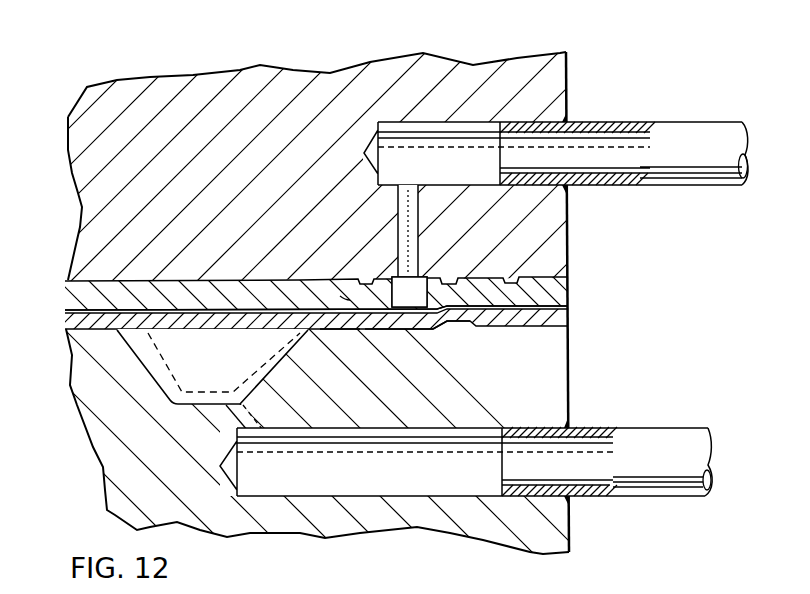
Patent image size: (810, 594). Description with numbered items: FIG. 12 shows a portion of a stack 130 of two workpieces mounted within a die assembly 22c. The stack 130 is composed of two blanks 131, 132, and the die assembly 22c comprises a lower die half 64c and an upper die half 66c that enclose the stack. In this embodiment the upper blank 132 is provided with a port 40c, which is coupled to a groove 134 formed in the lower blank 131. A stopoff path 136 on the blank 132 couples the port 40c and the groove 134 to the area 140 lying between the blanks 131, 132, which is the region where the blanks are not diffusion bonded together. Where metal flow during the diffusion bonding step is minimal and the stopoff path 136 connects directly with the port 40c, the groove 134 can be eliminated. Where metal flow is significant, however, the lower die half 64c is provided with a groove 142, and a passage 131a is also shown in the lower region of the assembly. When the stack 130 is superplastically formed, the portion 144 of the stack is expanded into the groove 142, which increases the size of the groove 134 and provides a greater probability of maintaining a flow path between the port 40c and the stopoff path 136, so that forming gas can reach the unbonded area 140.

The die assembly 22c is at (688, 263).
The port 40c is at (425, 272).
The lower die half 64c is at (570, 388).
The upper die half 66c is at (568, 63).
The stack 130 is at (569, 303).
The blank 131 is at (568, 318).
The passage 131a is at (195, 404).
The blank 132 is at (568, 287).
The groove 134 is at (400, 330).
The stopoff path 136 is at (343, 296).
The area 140 is at (183, 310).
The groove 142 is at (342, 330).
The portion 144 is at (380, 331).